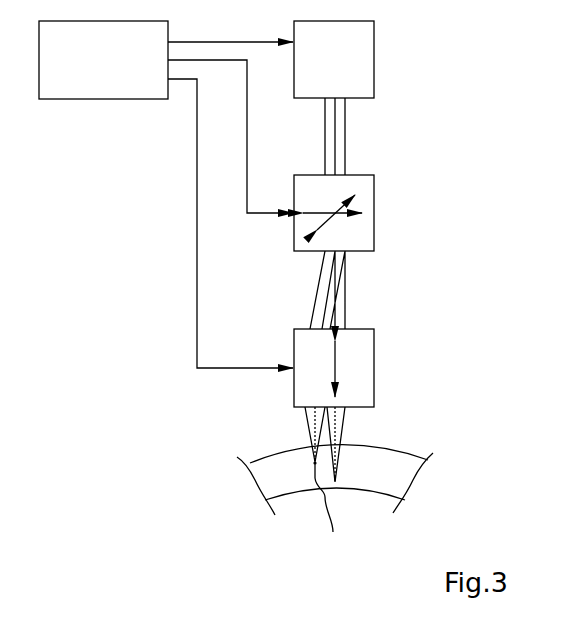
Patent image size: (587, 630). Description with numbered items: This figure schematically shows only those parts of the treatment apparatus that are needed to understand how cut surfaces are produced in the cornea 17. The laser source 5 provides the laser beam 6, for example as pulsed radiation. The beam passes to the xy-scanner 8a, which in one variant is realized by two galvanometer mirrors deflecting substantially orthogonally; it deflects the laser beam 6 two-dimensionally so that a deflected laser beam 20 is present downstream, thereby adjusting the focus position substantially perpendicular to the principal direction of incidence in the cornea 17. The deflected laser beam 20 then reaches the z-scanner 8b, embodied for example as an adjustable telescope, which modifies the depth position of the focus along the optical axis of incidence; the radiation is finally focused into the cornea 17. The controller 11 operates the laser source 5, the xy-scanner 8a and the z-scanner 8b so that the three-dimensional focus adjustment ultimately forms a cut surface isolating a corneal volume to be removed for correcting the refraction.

The controller 11 is at (117, 99).
The laser source 5 is at (374, 53).
The laser beam 6 is at (345, 130).
The xy-scanner 8a is at (374, 218).
The deflected laser beam 20 is at (333, 288).
The z-scanner 8b is at (374, 377).
The cornea 17 is at (402, 463).